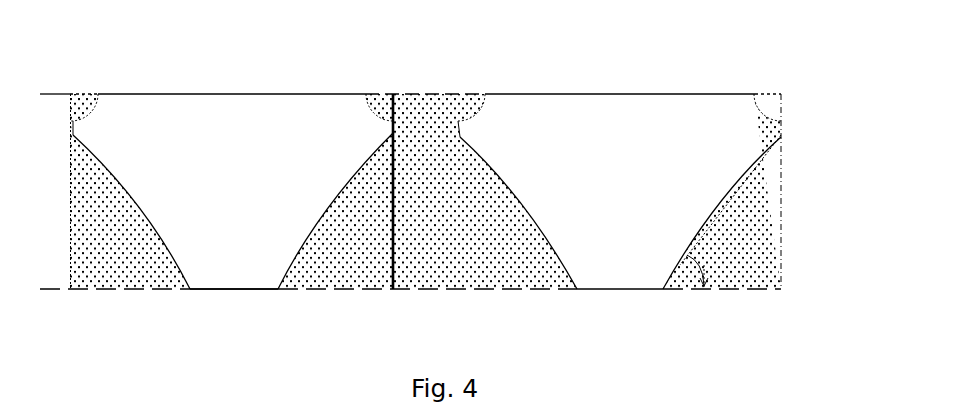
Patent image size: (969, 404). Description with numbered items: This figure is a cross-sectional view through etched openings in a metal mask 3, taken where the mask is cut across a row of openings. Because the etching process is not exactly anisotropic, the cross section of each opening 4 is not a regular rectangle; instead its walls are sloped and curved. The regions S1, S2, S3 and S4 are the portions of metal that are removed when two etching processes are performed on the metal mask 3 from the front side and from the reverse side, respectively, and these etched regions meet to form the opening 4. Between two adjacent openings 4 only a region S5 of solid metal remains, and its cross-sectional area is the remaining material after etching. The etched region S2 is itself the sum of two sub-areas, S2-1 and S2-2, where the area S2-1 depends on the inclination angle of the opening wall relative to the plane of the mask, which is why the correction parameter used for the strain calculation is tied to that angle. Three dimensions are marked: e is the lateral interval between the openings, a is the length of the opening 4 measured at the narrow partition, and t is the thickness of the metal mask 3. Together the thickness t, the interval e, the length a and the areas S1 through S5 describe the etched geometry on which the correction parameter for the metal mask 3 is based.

The metal mask 3 is at (410, 157).
The opening 4 is at (757, 191).
The etched region S1 is at (376, 106).
The etched region S2 is at (427, 191).
The area S2-1 is at (730, 200).
The area S2-2 is at (718, 204).
The etched region S3 is at (130, 191).
The etched region S4 is at (84, 107).
The remaining region S5 is at (234, 226).
The length of the opening a is at (488, 68).
The lateral interval of the openings e is at (395, 330).
The thickness of the metal mask t is at (53, 96).